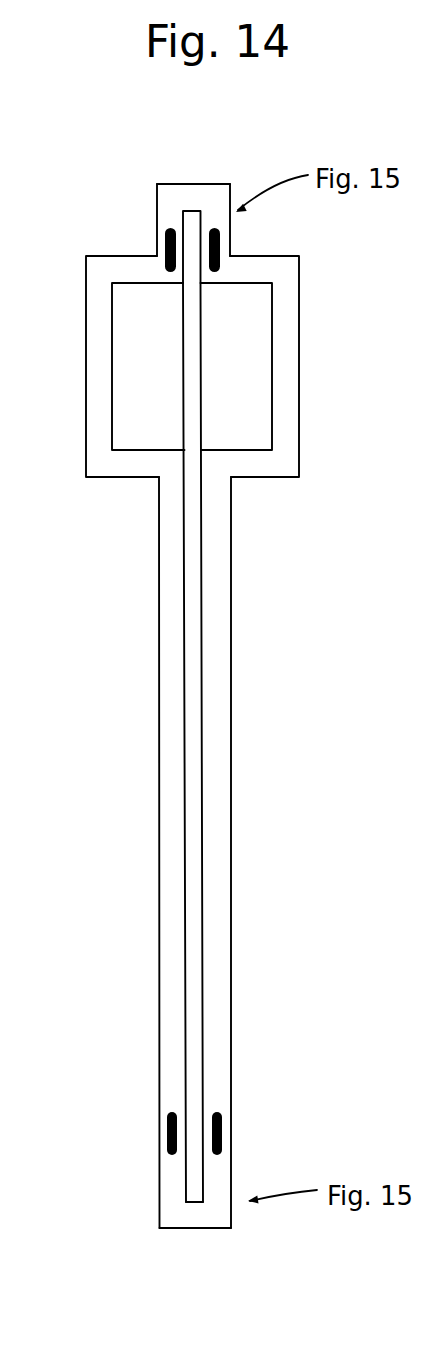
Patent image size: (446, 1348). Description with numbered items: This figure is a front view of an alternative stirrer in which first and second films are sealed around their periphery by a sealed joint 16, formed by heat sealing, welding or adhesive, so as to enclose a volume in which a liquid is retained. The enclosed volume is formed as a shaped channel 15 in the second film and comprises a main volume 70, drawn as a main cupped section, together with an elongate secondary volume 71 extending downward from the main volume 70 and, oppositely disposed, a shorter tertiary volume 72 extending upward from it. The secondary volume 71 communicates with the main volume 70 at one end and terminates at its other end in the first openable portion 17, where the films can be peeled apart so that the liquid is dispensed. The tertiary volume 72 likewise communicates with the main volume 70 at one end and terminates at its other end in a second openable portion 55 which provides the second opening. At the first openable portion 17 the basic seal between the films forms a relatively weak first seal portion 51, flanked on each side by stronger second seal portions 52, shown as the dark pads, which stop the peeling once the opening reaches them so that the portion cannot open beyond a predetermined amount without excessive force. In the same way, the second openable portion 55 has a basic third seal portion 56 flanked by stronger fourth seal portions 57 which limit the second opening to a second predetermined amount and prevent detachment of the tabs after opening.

The channel 15 is at (186, 610).
The sealed joint 16 is at (284, 422).
The first openable portion 17 is at (138, 1222).
The first seal portion 51 is at (188, 1231).
The second seal portions 52 is at (167, 1133).
The second openable portion 55 is at (146, 188).
The third seal portion 56 is at (192, 198).
The fourth seal portions 57 is at (160, 242).
The main volume 70 is at (138, 368).
The secondary volume 71 is at (193, 873).
The tertiary volume 72 is at (197, 220).